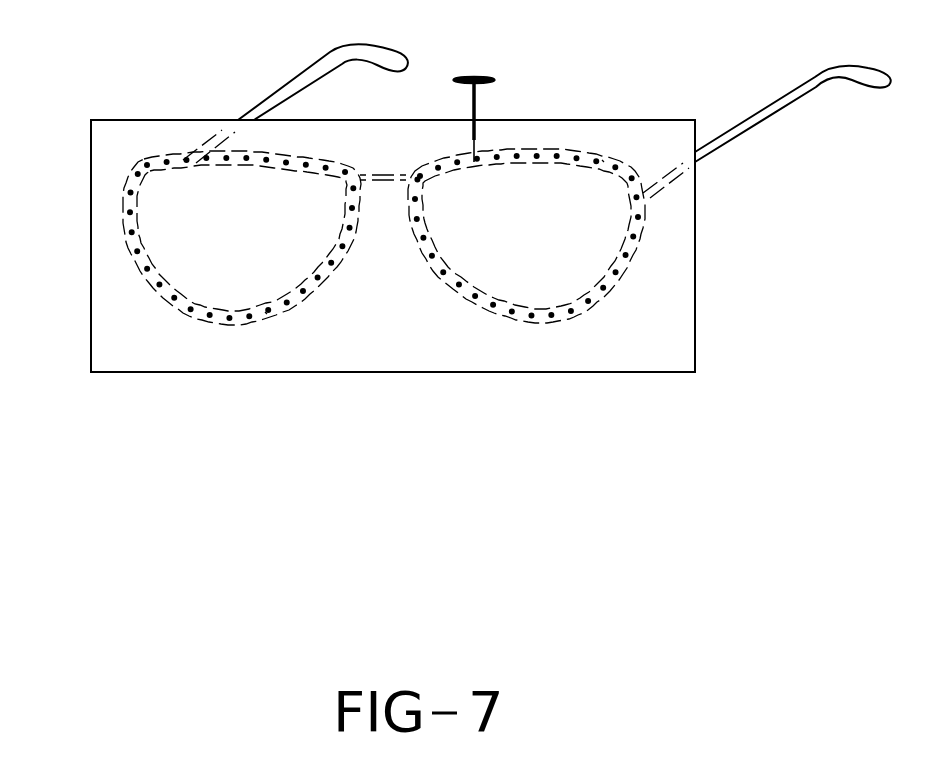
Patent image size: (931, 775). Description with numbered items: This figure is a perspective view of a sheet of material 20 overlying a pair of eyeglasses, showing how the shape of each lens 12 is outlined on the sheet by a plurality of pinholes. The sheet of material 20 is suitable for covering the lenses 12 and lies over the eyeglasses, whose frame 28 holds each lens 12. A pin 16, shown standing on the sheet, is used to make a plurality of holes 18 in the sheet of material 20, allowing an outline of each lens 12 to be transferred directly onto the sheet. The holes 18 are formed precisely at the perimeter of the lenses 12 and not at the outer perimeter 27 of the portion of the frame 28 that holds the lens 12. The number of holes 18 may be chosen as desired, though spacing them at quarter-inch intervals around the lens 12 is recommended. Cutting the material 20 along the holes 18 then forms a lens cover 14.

The lens 12 is at (256, 187).
The lens cover 14 is at (205, 280).
The pin 16 is at (474, 78).
The holes 18 is at (602, 160).
The sheet of material 20 is at (112, 158).
The outer perimeter 27 is at (338, 166).
The frame 28 is at (301, 73).